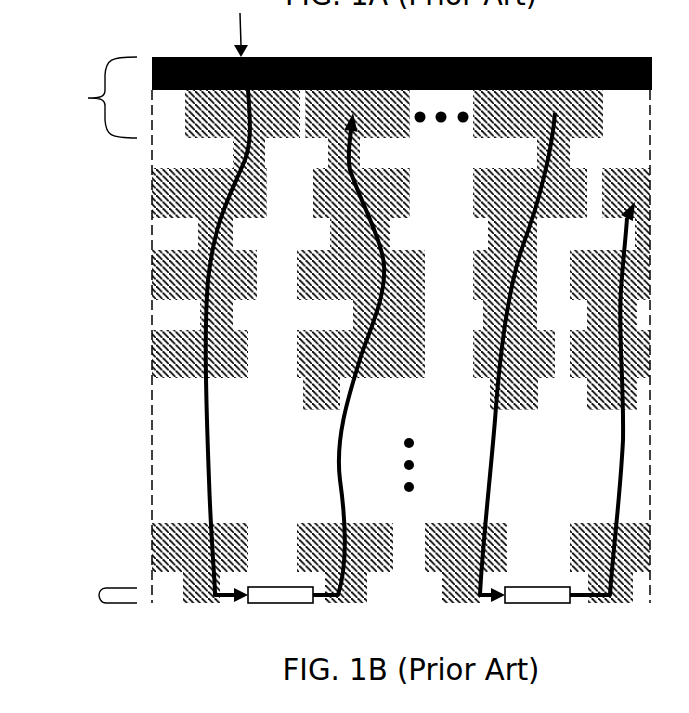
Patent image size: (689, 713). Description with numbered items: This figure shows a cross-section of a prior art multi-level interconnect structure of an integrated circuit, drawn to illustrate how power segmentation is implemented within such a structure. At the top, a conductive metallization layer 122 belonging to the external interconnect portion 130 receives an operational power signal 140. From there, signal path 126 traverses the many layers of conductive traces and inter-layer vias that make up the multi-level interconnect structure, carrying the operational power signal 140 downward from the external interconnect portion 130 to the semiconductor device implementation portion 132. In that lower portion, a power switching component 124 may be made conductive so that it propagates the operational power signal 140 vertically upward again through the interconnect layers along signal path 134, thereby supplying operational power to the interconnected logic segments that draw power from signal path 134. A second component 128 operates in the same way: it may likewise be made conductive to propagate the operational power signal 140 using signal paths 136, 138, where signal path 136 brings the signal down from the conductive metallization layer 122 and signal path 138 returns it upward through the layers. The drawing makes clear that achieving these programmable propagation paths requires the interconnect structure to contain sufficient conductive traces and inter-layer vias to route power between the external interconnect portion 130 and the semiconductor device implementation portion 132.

The conductive metallization layer 122 is at (226, 58).
The power switching component 124 is at (279, 603).
The signal path 126 is at (207, 432).
The component 128 is at (539, 603).
The external interconnect portion 130 is at (77, 97).
The semiconductor device implementation portion 132 is at (83, 596).
The signal path 134 is at (338, 458).
The signal path 136 is at (490, 474).
The signal path 138 is at (623, 480).
The operational power signal 140 is at (237, 28).